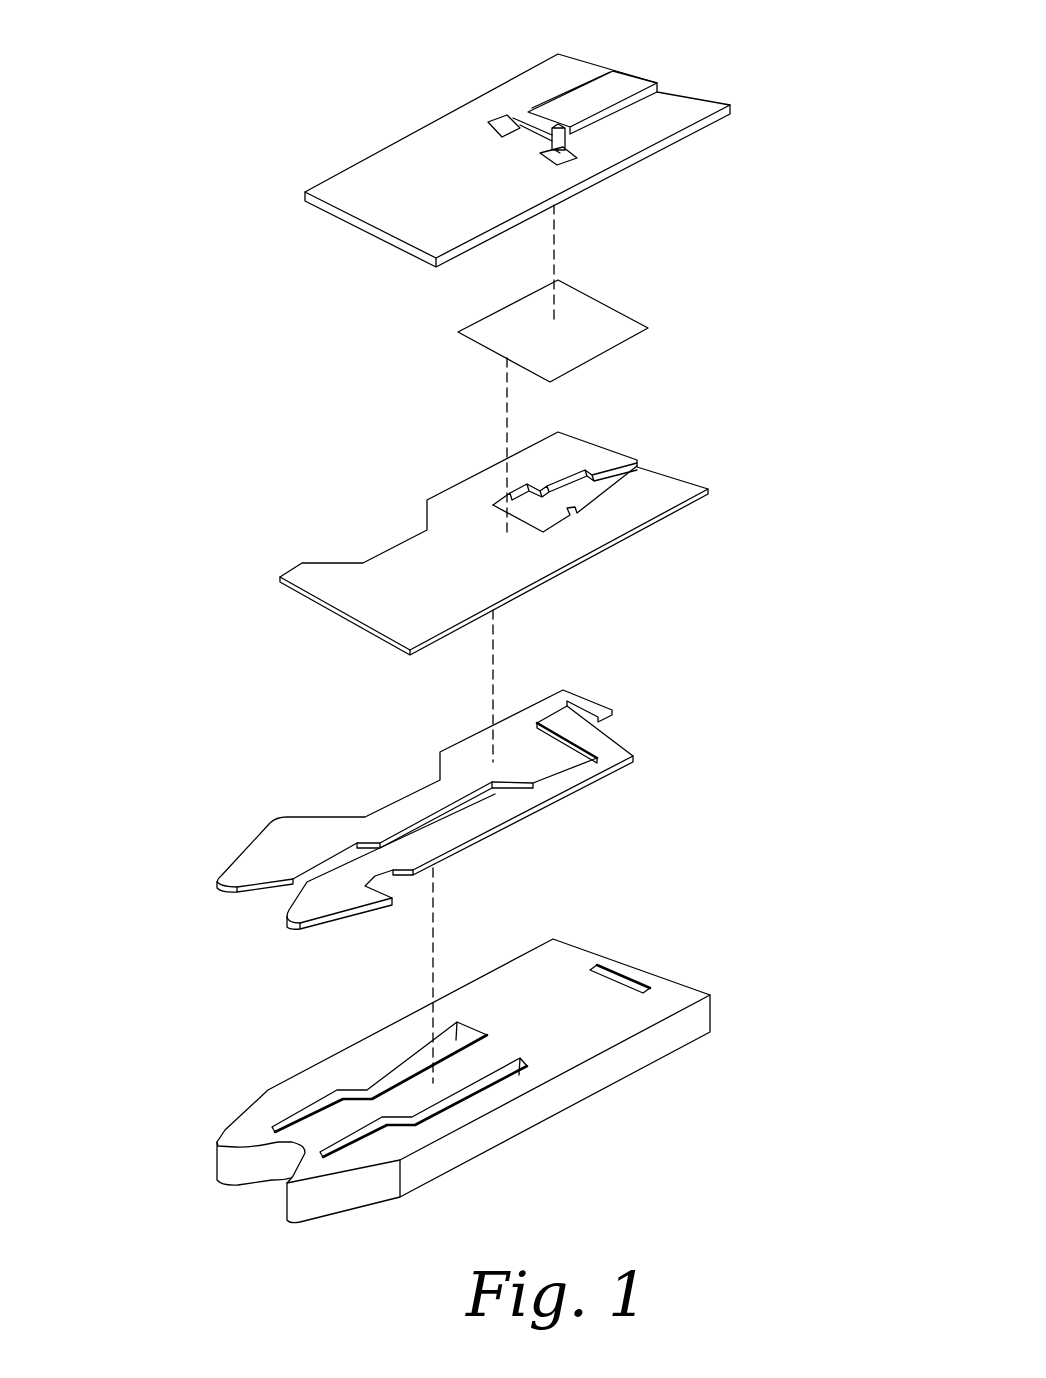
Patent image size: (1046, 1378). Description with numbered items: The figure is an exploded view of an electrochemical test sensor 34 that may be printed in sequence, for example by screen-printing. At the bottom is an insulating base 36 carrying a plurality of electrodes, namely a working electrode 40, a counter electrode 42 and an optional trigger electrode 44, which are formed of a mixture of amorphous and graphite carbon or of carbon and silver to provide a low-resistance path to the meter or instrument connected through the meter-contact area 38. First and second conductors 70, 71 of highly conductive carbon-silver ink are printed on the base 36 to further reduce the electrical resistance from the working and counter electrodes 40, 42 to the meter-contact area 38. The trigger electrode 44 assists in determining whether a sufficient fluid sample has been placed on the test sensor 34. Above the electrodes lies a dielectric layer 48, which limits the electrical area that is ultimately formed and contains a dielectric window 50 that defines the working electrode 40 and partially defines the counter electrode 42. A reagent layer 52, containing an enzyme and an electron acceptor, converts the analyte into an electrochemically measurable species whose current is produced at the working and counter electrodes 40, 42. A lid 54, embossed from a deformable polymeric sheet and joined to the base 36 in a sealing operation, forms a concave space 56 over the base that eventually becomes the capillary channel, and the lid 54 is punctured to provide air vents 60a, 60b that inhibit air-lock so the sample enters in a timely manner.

The electrochemical test sensor 34 is at (140, 88).
The lid 54 is at (362, 128).
The concave space 56 is at (647, 62).
The air vent 60a is at (572, 158).
The air vent 60b is at (498, 116).
The reagent layer 52 is at (622, 292).
The dielectric layer 48 is at (702, 455).
The dielectric window 50 is at (589, 478).
The meter-contact area 38 is at (248, 906).
The working electrode 40 is at (582, 738).
The counter electrode 42 is at (540, 758).
The insulating base 36 is at (647, 1092).
The trigger electrode 44 is at (623, 983).
The first conductor 70 is at (432, 1107).
The second conductor 71 is at (320, 1103).